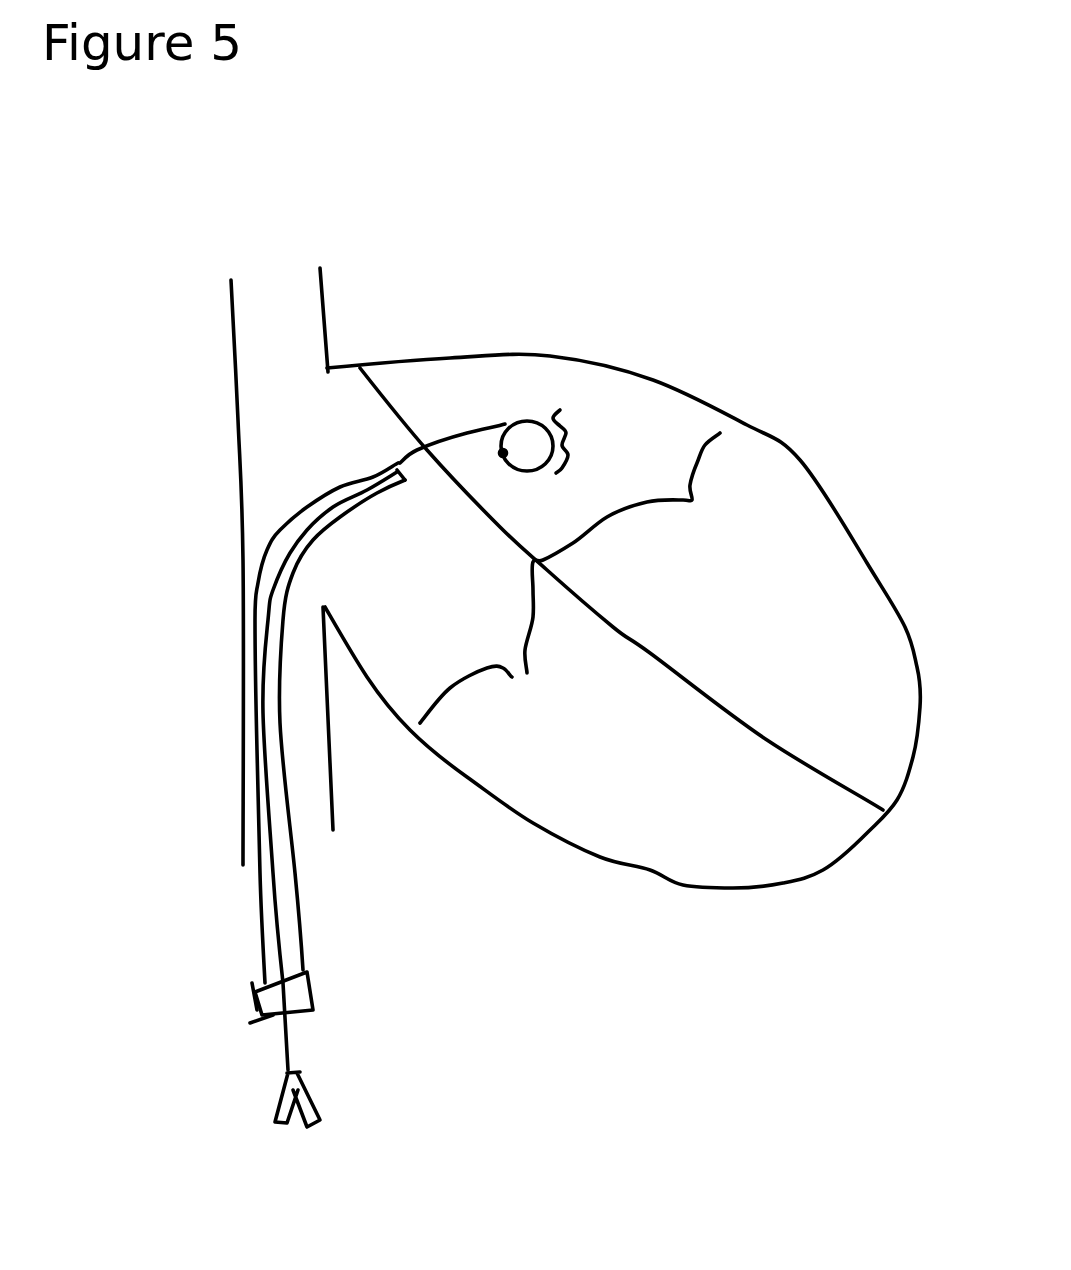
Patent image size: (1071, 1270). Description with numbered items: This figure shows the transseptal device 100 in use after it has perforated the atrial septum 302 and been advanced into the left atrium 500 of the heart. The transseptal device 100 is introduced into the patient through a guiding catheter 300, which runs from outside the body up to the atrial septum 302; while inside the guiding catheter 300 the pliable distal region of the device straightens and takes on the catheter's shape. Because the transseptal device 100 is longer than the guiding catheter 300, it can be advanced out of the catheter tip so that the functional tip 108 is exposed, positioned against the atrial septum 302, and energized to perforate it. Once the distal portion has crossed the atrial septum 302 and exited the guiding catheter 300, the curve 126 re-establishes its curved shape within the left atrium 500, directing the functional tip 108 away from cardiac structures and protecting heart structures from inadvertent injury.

The left atrium 500 is at (548, 395).
The functional tip 108 is at (503, 450).
The curve 126 is at (563, 433).
The atrial septum 302 is at (388, 400).
The guiding catheter 300 is at (260, 878).
The transseptal device 100 is at (280, 940).